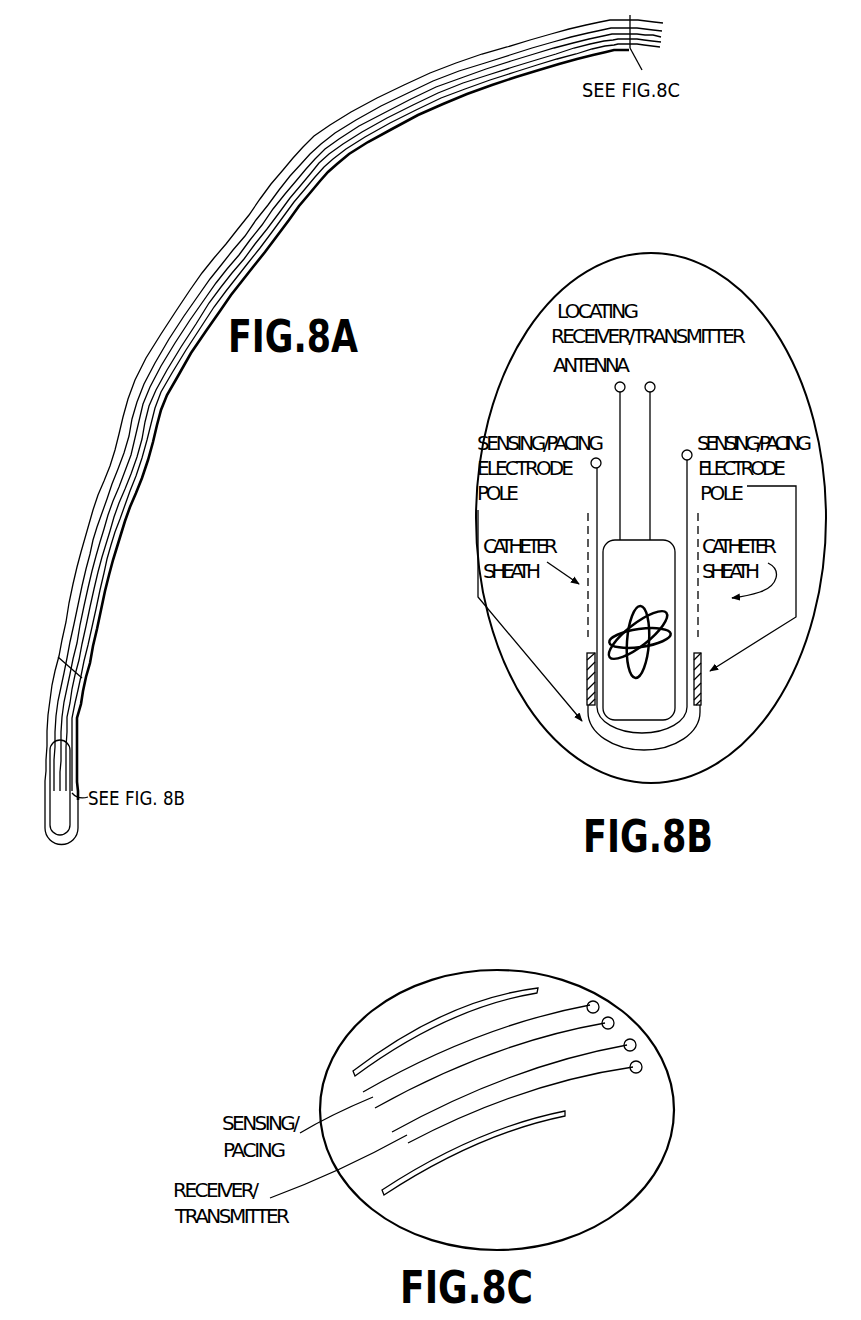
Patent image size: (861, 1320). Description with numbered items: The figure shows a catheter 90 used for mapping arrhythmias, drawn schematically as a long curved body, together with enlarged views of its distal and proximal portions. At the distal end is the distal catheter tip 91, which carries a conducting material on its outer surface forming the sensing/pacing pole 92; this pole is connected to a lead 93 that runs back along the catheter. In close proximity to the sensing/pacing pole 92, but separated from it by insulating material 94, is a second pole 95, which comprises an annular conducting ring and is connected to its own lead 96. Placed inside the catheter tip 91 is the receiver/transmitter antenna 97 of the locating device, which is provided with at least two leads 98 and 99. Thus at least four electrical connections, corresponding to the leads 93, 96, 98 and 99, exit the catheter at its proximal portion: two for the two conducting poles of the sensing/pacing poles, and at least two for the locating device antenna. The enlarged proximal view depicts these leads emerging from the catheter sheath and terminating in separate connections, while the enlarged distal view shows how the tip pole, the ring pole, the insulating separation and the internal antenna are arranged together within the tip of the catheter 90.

In FIG. 8A, the catheter 90 is at (110, 447).
In FIG. 8A, the distal catheter tip 91 is at (62, 846).
In FIG. 8B, the sensing/pacing pole 92 is at (680, 739).
In FIG. 8B, the lead 93 is at (596, 496).
In FIG. 8B, the insulating material 94 is at (587, 698).
In FIG. 8B, the pole 95 is at (719, 655).
In FIG. 8B, the lead 96 is at (687, 486).
In FIG. 8B, the receiver/transmitter antenna 97 is at (664, 556).
In FIG. 8B, the lead 98 is at (650, 415).
In FIG. 8B, the lead 99 is at (620, 418).